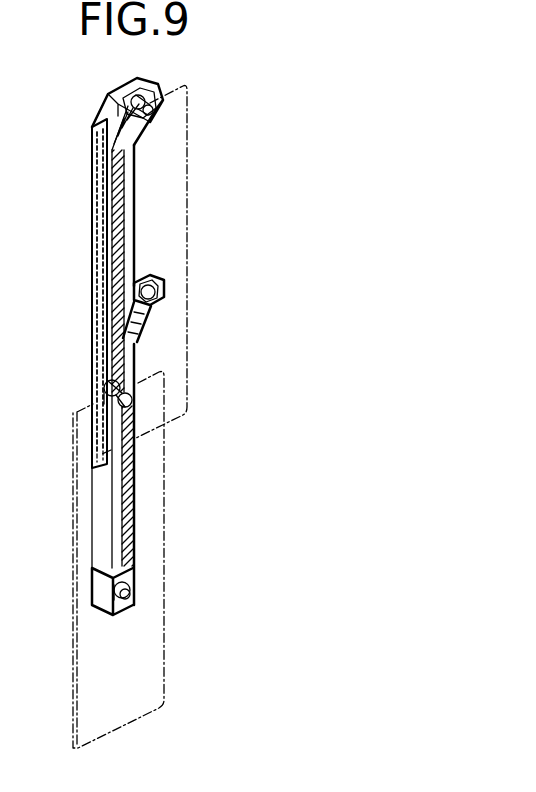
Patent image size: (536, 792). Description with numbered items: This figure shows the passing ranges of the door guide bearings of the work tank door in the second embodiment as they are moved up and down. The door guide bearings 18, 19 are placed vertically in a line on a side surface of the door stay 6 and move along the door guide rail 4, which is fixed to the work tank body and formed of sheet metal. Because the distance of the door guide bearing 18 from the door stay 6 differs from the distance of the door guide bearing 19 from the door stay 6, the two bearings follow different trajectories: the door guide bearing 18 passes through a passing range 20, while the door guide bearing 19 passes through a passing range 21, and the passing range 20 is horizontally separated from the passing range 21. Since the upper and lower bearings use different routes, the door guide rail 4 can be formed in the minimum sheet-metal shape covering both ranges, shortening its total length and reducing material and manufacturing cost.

The door guide rail 4 is at (103, 588).
The door stay 6 is at (173, 222).
The door guide bearing 18 is at (163, 100).
The door guide bearing 19 is at (164, 292).
The passing range 20 is at (113, 220).
The passing range 21 is at (125, 512).